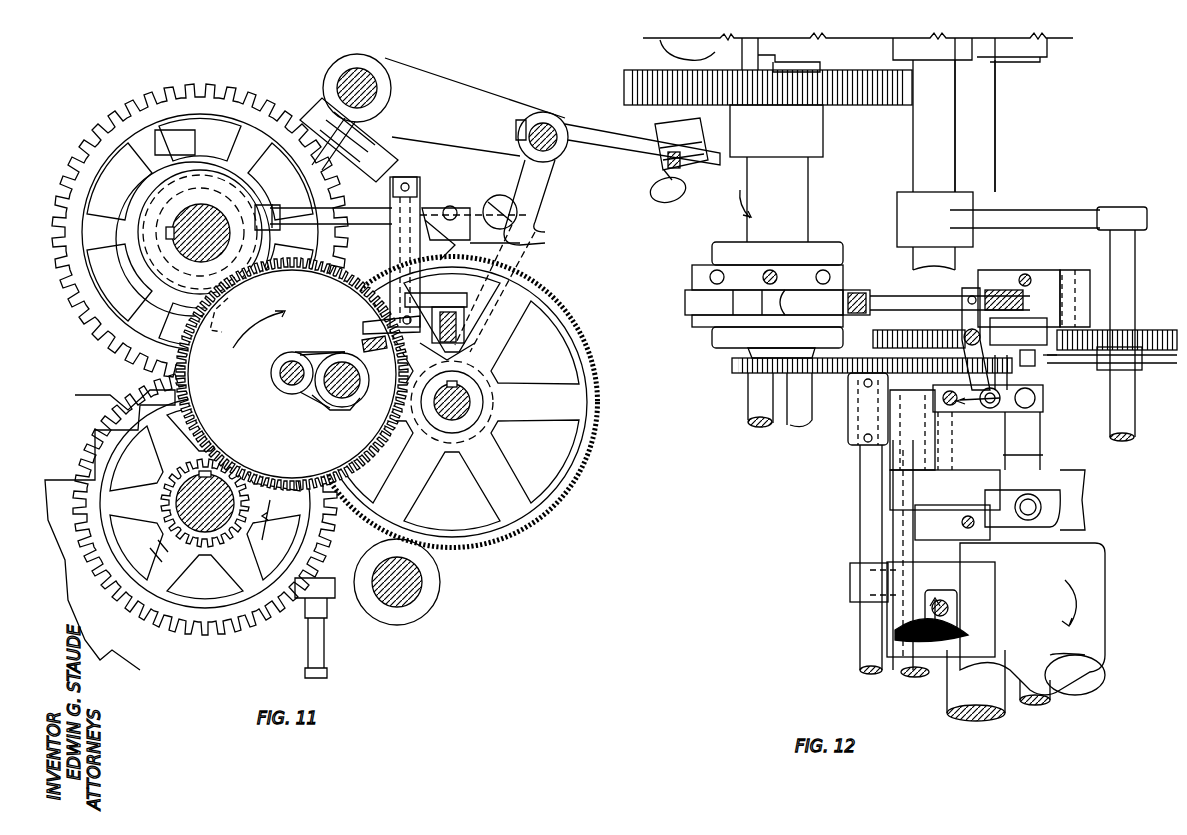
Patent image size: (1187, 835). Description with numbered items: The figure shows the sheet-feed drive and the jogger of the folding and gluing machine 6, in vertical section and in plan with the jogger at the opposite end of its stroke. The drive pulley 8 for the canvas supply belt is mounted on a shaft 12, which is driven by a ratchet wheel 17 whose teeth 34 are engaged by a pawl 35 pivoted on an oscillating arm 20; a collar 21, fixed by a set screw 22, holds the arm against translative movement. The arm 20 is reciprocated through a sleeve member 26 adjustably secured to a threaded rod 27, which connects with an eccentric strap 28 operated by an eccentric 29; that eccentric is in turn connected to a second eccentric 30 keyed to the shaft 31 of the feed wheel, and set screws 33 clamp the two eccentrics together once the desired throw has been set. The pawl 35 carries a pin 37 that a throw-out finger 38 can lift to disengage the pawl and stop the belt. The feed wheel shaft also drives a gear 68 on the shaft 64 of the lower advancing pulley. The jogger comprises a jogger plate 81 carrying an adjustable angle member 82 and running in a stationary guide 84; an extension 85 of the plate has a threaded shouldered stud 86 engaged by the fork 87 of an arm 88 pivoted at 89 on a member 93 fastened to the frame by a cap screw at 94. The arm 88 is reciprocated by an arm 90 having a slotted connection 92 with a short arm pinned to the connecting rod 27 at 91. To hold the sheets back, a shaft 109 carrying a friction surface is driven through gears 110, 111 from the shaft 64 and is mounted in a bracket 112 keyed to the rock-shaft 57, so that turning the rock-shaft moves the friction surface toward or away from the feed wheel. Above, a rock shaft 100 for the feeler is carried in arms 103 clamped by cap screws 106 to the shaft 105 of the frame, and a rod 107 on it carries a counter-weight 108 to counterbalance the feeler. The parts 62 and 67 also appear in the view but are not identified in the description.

In FIG. 11, the folding and gluing machine 6 is at (410, 615).
In FIG. 12, the folding and gluing machine 6 is at (988, 160).
In FIG. 12, the drive pulley 8 is at (1090, 560).
In FIG. 11, the shaft 12 is at (462, 406).
In FIG. 12, the shaft 12 is at (1040, 700).
In FIG. 11, the ratchet wheel 17 is at (522, 524).
In FIG. 12, the ratchet wheel 17 is at (1150, 328).
In FIG. 11, the arm 20 is at (500, 250).
In FIG. 12, the arm 20 is at (1040, 292).
In FIG. 12, the collar 21 is at (1015, 272).
In FIG. 12, the set screw 22 is at (1028, 275).
In FIG. 12, the sleeve member 26 is at (985, 288).
In FIG. 11, the threaded rod 27 is at (350, 210).
In FIG. 12, the threaded rod 27 is at (912, 296).
In FIG. 11, the eccentric strap 28 is at (255, 200).
In FIG. 12, the eccentric strap 28 is at (690, 302).
In FIG. 12, the eccentric 29 is at (700, 278).
In FIG. 12, the eccentric 30 is at (720, 342).
In FIG. 11, the shaft 31 is at (198, 233).
In FIG. 12, the shaft 31 is at (800, 228).
In FIG. 12, the set screws 33 is at (762, 272).
In FIG. 11, the teeth 34 is at (582, 470).
In FIG. 11, the pawl 35 is at (425, 236).
In FIG. 12, the pawl 35 is at (1018, 332).
In FIG. 11, the pin 37 is at (452, 206).
In FIG. 12, the pin 37 is at (1035, 365).
In FIG. 11, the throw-out finger 38 is at (538, 196).
In FIG. 11, the rock-shaft 57 is at (346, 392).
In FIG. 12, the rock-shaft 57 is at (908, 672).
In FIG. 11, the roller 62 is at (500, 196).
In FIG. 12, the roller 62 is at (1080, 370).
In FIG. 11, the shaft 64 is at (205, 503).
In FIG. 12, the shaft 64 is at (768, 418).
In FIG. 11, the gear 67 is at (75, 160).
In FIG. 12, the gear 67 is at (625, 72).
In FIG. 11, the gear 68 is at (225, 632).
In FIG. 12, the jogger plate 81 is at (985, 615).
In FIG. 12, the angle member 82 is at (990, 645).
In FIG. 12, the guide 84 is at (920, 533).
In FIG. 11, the extension 85 is at (362, 343).
In FIG. 12, the extension 85 is at (1000, 443).
In FIG. 11, the threaded shouldered stud 86 is at (362, 325).
In FIG. 12, the threaded shouldered stud 86 is at (945, 404).
In FIG. 12, the fork 87 is at (949, 441).
In FIG. 11, the arm 88 is at (400, 318).
In FIG. 12, the arm 88 is at (955, 405).
In FIG. 11, the pivot 89 is at (395, 252).
In FIG. 12, the pivot 89 is at (1022, 441).
In FIG. 11, the arm 90 is at (408, 178).
In FIG. 12, the arm 90 is at (1014, 372).
In FIG. 12, the pin connection 91 is at (974, 295).
In FIG. 12, the slotted connection 92 is at (962, 325).
In FIG. 11, the member 93 is at (466, 330).
In FIG. 12, the member 93 is at (1000, 404).
In FIG. 11, the cap screw fastening 94 is at (468, 313).
In FIG. 12, the cap screw fastening 94 is at (1043, 400).
In FIG. 11, the rock shaft 100 is at (545, 122).
In FIG. 12, the rock shaft 100 is at (1128, 265).
In FIG. 11, the arm 103 is at (440, 88).
In FIG. 12, the arm 103 is at (1034, 218).
In FIG. 11, the shaft 105 is at (340, 80).
In FIG. 12, the shaft 105 is at (922, 150).
In FIG. 11, the cap screws 106 is at (393, 150).
In FIG. 11, the rod 107 is at (608, 137).
In FIG. 12, the rod 107 is at (1160, 364).
In FIG. 11, the counter-weight 108 is at (685, 135).
In FIG. 11, the shaft 109 is at (655, 195).
In FIG. 12, the shaft 109 is at (862, 540).
In FIG. 11, the gear 110 is at (298, 268).
In FIG. 12, the gear 110 is at (822, 374).
In FIG. 11, the gear 111 is at (166, 552).
In FIG. 12, the gear 111 is at (732, 368).
In FIG. 11, the bracket 112 is at (312, 392).
In FIG. 12, the bracket 112 is at (850, 420).